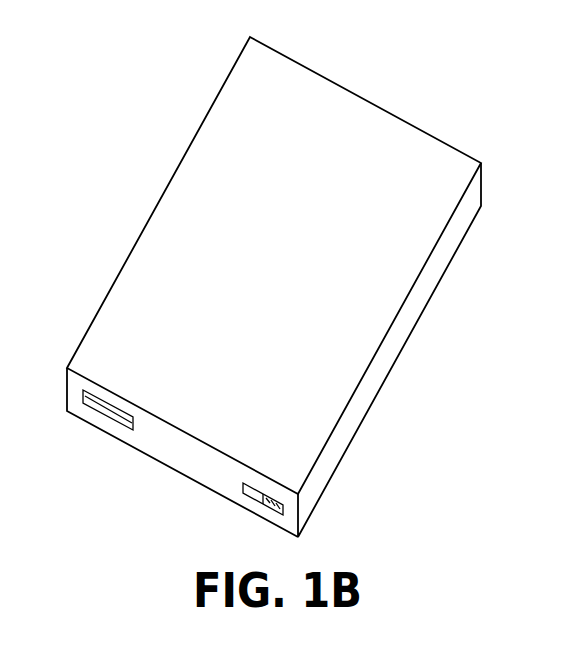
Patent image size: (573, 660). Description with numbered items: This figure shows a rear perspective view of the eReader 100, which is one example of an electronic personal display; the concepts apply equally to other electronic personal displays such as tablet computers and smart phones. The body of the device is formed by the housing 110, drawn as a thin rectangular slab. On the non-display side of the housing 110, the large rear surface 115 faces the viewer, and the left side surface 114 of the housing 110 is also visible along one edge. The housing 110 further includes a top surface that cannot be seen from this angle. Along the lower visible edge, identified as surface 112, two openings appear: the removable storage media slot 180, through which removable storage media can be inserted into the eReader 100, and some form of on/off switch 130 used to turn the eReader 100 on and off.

The eReader 100 is at (94, 132).
The housing 110 is at (482, 192).
The rear surface 115 is at (402, 192).
The left side surface 114 is at (402, 332).
The front side wall 112 is at (165, 443).
The removable storage media slot 180 is at (93, 402).
The on/off switch 130 is at (262, 508).